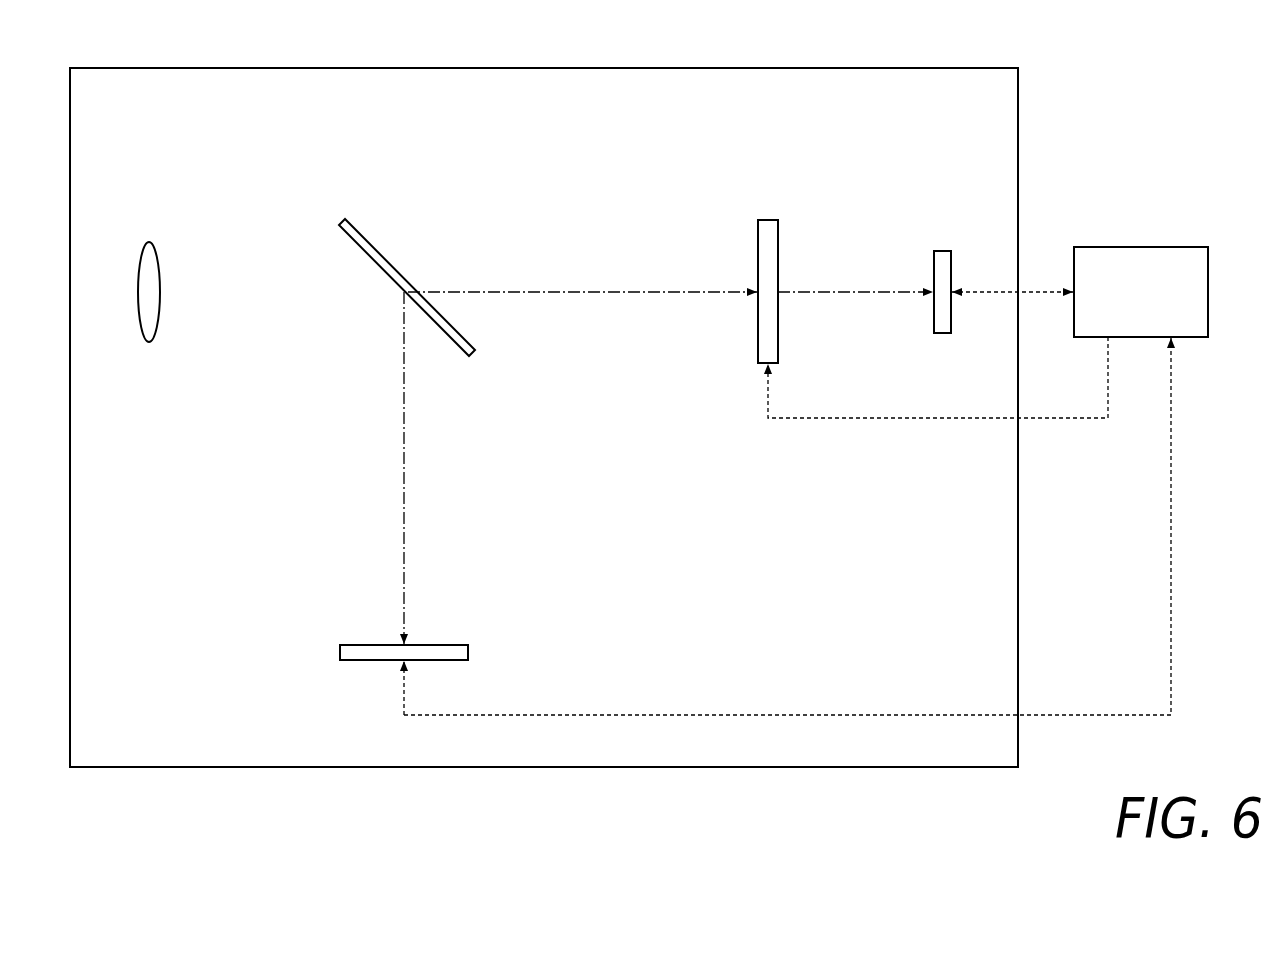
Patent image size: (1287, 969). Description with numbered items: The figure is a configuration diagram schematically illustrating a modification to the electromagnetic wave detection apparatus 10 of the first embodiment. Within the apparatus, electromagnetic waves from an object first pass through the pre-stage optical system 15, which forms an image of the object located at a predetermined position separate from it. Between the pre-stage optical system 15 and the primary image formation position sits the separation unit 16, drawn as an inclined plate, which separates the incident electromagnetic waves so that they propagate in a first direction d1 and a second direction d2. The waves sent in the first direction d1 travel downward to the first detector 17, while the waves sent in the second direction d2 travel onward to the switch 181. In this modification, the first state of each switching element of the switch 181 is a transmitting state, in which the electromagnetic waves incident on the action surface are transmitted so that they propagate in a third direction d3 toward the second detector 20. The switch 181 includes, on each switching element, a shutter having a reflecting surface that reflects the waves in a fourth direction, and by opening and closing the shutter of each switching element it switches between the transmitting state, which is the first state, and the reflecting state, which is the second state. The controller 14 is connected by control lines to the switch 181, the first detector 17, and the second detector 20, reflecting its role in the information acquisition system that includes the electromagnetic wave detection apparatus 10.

The electromagnetic wave detection apparatus 10 is at (175, 66).
The controller 14 is at (1142, 247).
The pre-stage optical system 15 is at (148, 242).
The separation unit 16 is at (358, 229).
The first detector 17 is at (468, 652).
The switch 181 is at (768, 220).
The second detector 20 is at (942, 251).
The first direction d1 is at (405, 487).
The second direction d2 is at (575, 290).
The third direction d3 is at (851, 290).